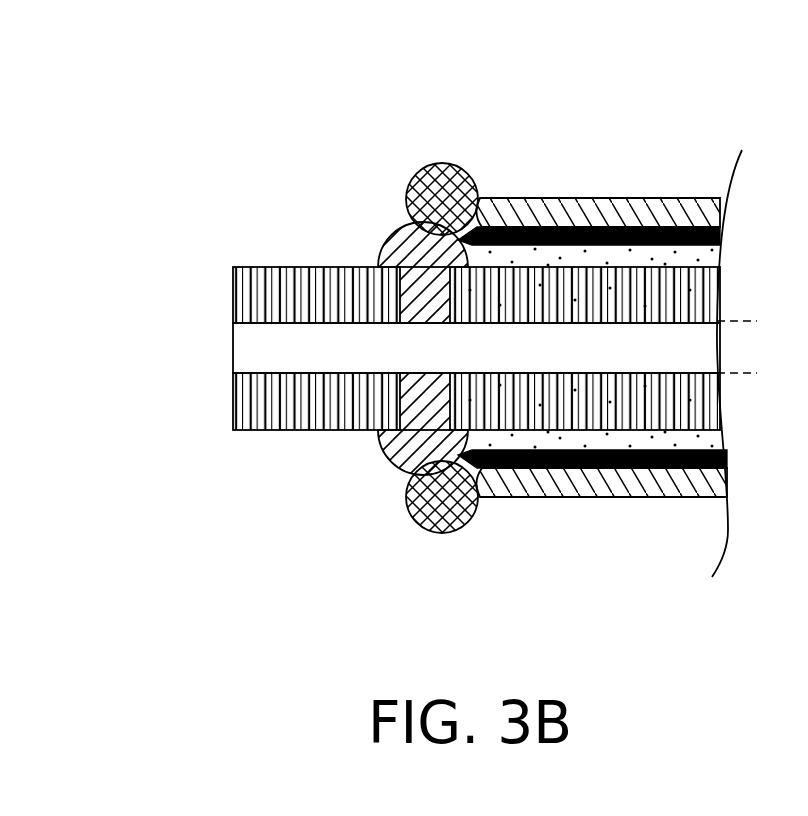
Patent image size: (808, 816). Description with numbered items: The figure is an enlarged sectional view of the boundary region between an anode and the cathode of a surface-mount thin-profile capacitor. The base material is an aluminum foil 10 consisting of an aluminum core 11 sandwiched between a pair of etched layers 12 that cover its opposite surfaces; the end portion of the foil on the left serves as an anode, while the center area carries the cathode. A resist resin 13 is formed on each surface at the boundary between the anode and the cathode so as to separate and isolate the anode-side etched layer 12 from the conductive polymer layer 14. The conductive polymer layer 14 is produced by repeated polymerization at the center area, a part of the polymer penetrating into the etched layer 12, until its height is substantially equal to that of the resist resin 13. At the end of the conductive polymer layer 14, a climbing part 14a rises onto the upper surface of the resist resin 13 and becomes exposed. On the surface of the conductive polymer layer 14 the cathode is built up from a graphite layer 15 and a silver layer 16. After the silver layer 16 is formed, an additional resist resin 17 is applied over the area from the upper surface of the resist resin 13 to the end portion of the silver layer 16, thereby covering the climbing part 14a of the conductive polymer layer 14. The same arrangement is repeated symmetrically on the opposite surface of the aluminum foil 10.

The aluminum foil 10 is at (400, 349).
The aluminum core 11 is at (438, 348).
The etched layer 12 is at (223, 270).
The resist resin 13 is at (407, 245).
The conductive polymer layer 14 is at (733, 232).
The climbing part of the conductive polymer layer 14a is at (477, 195).
The graphite layer 15 is at (689, 204).
The silver layer 16 is at (620, 203).
The additional resist resin 17 is at (443, 175).